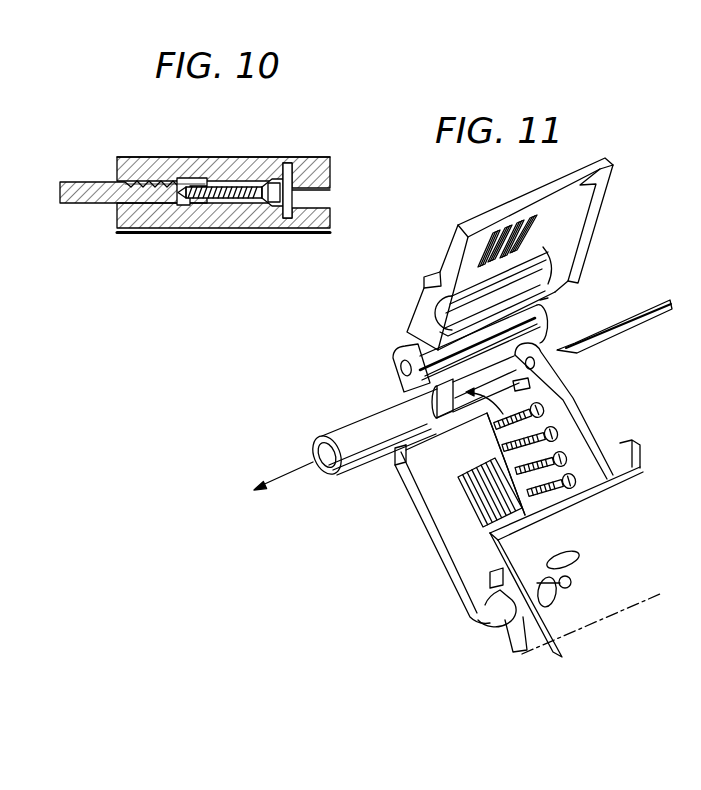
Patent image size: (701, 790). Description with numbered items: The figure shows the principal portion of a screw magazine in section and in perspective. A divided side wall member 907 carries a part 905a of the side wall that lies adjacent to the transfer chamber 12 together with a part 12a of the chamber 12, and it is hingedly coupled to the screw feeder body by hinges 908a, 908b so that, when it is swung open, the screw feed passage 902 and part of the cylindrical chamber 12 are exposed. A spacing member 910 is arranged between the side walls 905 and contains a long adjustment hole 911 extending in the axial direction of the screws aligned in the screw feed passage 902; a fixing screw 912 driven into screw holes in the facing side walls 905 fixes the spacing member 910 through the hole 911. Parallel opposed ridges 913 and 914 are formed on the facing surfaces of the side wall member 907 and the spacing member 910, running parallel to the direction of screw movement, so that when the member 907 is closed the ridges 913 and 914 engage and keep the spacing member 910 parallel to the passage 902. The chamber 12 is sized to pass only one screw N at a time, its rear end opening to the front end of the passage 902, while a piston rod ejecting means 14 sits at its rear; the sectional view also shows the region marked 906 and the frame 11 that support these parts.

In FIG. 10, the side wall 905 is at (217, 168).
In FIG. 11, the side wall 905 is at (525, 638).
In FIG. 10, the spacing member 910 is at (82, 182).
In FIG. 11, the spacing member 910 is at (457, 550).
In FIG. 10, the sleeve 906 is at (182, 183).
In FIG. 10, the screw feed passage 902 is at (187, 200).
In FIG. 10, the ridge 913 is at (160, 180).
In FIG. 11, the ridge 913 is at (532, 236).
In FIG. 10, the ridge 914 is at (163, 203).
In FIG. 11, the ridge 914 is at (472, 495).
In FIG. 10, the frame 11 is at (312, 158).
In FIG. 11, the frame 11 is at (560, 372).
In FIG. 10, the screw head N is at (233, 202).
In FIG. 11, the screw head N is at (545, 410).
In FIG. 11, the divided side wall member 907 is at (448, 251).
In FIG. 11, the part of side wall 905a is at (558, 238).
In FIG. 11, the part of chamber 12a is at (524, 275).
In FIG. 11, the hinge 908b is at (413, 350).
In FIG. 11, the hinge 908a is at (537, 331).
In FIG. 11, the piston rod ejecting means 14 is at (660, 305).
In FIG. 11, the transfer chamber 12 is at (357, 437).
In FIG. 11, the adjustment hole 911 is at (490, 603).
In FIG. 11, the fixing screw 912 is at (572, 578).